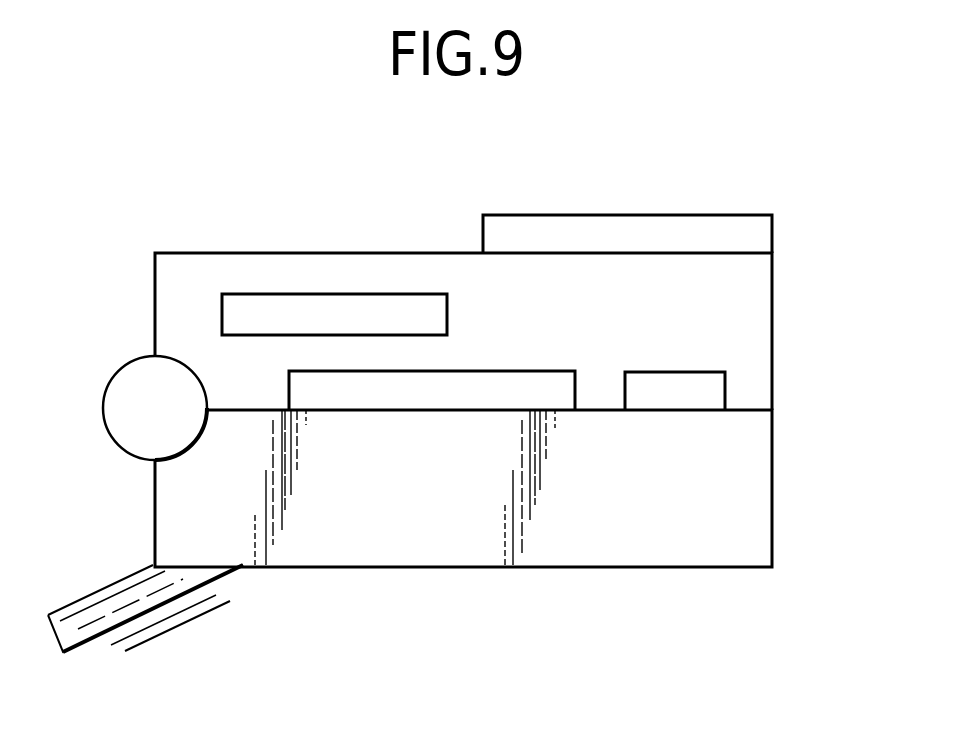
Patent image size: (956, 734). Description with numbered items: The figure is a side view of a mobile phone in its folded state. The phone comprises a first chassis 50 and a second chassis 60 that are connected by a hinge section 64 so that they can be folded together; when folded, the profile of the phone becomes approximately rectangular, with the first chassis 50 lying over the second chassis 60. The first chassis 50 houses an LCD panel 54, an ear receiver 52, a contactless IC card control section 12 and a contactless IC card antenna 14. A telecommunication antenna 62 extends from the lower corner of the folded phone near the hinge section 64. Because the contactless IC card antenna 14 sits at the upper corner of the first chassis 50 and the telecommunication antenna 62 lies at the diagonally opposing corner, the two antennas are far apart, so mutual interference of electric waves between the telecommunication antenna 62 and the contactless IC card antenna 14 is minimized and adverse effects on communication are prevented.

The contactless IC card control section 12 is at (338, 305).
The contactless IC card antenna 14 is at (627, 228).
The first chassis 50 is at (758, 331).
The ear receiver 52 is at (675, 398).
The LCD panel 54 is at (432, 398).
The second chassis 60 is at (757, 493).
The telecommunication antenna 62 is at (125, 612).
The hinge section 64 is at (118, 410).